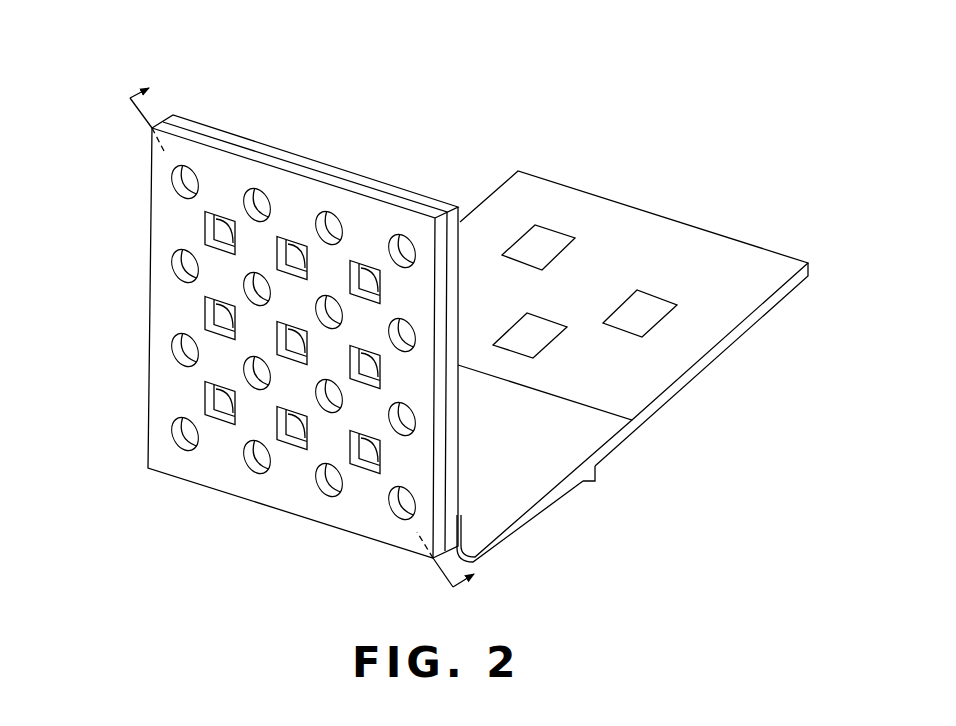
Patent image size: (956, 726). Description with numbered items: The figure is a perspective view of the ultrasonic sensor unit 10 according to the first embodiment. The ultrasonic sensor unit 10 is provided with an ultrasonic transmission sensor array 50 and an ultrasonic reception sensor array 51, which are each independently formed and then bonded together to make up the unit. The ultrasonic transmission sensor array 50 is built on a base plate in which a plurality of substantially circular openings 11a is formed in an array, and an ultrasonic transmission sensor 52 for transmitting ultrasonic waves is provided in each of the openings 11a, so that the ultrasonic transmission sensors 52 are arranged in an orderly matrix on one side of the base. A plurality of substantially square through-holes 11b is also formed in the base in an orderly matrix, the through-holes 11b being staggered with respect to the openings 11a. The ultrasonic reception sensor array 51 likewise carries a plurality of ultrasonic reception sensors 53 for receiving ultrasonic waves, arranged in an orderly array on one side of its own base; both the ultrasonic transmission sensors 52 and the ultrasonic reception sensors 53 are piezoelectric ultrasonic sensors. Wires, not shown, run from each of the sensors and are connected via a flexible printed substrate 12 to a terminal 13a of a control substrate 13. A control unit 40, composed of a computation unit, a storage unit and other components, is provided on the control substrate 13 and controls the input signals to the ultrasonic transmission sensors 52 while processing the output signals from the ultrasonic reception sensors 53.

The ultrasonic sensor unit 10 is at (414, 66).
The openings 11a is at (174, 180).
The through-holes 11b is at (213, 411).
The flexible printed substrate 12 is at (518, 505).
The control substrate 13 is at (744, 296).
The terminal 13a is at (584, 431).
The control unit 40 is at (626, 223).
The ultrasonic transmission sensor array 50 is at (330, 180).
The ultrasonic reception sensor array 51 is at (270, 150).
The ultrasonic transmission sensors 52 is at (180, 266).
The ultrasonic reception sensors 53 is at (214, 316).